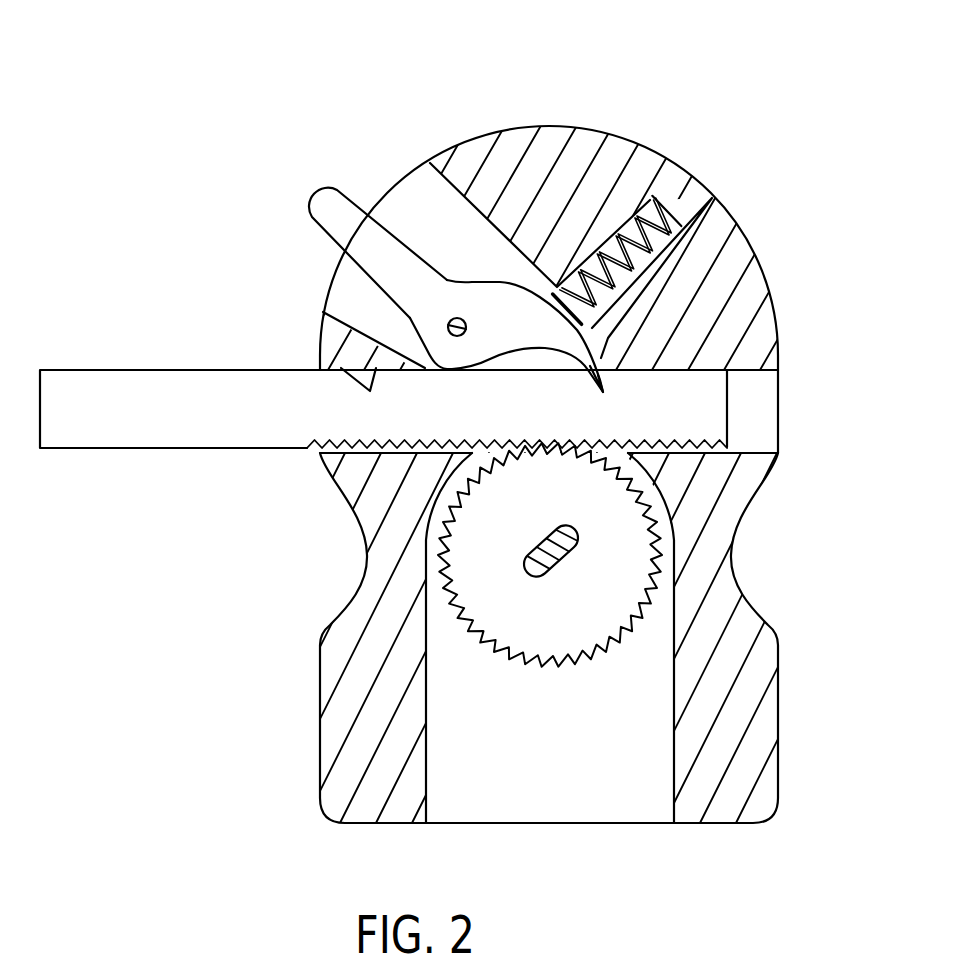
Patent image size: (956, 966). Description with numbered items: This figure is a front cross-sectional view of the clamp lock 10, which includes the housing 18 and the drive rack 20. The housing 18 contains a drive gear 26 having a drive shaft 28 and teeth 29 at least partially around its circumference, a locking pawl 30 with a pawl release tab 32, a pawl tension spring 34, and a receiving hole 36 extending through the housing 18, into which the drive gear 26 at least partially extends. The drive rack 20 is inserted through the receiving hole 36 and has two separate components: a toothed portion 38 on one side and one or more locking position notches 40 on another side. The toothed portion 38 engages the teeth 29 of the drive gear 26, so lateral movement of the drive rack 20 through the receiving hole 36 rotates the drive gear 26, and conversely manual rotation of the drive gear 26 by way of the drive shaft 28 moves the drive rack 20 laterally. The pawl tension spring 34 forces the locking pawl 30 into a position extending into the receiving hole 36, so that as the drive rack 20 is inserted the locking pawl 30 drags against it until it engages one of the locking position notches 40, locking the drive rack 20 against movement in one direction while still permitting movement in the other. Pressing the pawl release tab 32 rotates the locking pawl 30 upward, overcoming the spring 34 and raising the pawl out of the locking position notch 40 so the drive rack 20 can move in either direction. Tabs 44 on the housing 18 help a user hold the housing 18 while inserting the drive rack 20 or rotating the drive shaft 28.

The clamp lock 10 is at (354, 57).
The housing 18 is at (760, 795).
The drive rack 20 is at (190, 432).
The drive gear 26 is at (633, 577).
The drive shaft 28 is at (532, 562).
The teeth 29 is at (673, 513).
The locking pawl 30 is at (495, 306).
The pawl release tab 32 is at (332, 207).
The pawl tension spring 34 is at (612, 245).
The receiving hole 36 is at (756, 410).
The toothed portion 38 is at (330, 455).
The locking position notches 40 is at (363, 377).
The tabs 44 is at (352, 618).